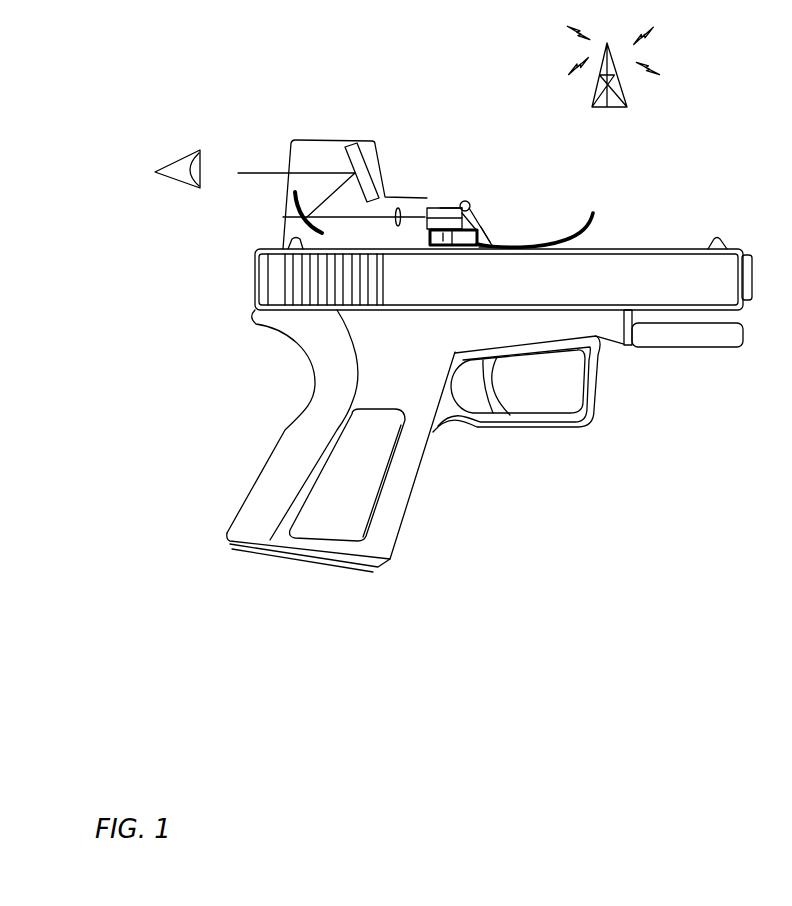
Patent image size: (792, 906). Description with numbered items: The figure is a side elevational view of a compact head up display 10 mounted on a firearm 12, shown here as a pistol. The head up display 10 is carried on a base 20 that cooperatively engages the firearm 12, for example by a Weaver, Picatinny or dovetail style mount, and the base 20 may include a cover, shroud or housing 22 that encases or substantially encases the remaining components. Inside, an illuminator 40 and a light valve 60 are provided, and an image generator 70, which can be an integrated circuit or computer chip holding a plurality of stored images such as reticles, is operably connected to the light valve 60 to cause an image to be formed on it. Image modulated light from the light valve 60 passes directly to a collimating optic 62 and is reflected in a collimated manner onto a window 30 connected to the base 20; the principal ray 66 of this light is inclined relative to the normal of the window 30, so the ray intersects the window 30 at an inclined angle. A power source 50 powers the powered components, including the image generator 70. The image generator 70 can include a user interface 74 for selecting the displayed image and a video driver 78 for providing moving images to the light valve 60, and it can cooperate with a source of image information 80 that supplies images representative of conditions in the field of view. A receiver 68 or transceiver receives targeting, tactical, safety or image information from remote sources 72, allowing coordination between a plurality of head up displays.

The head up display 10 is at (326, 122).
The firearm 12 is at (700, 352).
The base 20 is at (283, 243).
The housing 22 is at (485, 231).
The window 30 is at (353, 142).
The illuminator 40 is at (482, 211).
The power source 50 is at (432, 207).
The light valve 60 is at (399, 205).
The collimating optic 62 is at (283, 217).
The principal ray 66 is at (263, 172).
The receiver 68 is at (436, 247).
The image generator 70 is at (456, 207).
The remote sources 72 is at (612, 108).
The user interface 74 is at (469, 202).
The video driver 78 is at (448, 207).
The source of image information 80 is at (538, 216).